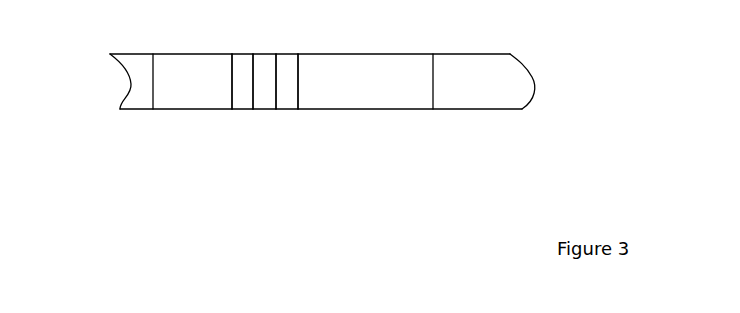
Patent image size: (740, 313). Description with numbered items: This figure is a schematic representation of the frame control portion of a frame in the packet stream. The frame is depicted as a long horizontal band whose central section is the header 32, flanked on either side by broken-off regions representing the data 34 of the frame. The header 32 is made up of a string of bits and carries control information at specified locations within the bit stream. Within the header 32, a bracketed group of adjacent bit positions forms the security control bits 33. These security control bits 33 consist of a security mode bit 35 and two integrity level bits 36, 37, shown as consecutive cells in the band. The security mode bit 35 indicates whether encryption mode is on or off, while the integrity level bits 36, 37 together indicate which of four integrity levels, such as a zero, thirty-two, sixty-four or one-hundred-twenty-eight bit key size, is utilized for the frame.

The header 32 is at (300, 121).
The security control bits 33 is at (296, 43).
The data 34 is at (132, 63).
The security mode bit 35 is at (243, 100).
The integrity level bit 36 is at (265, 100).
The integrity level bit 37 is at (287, 100).